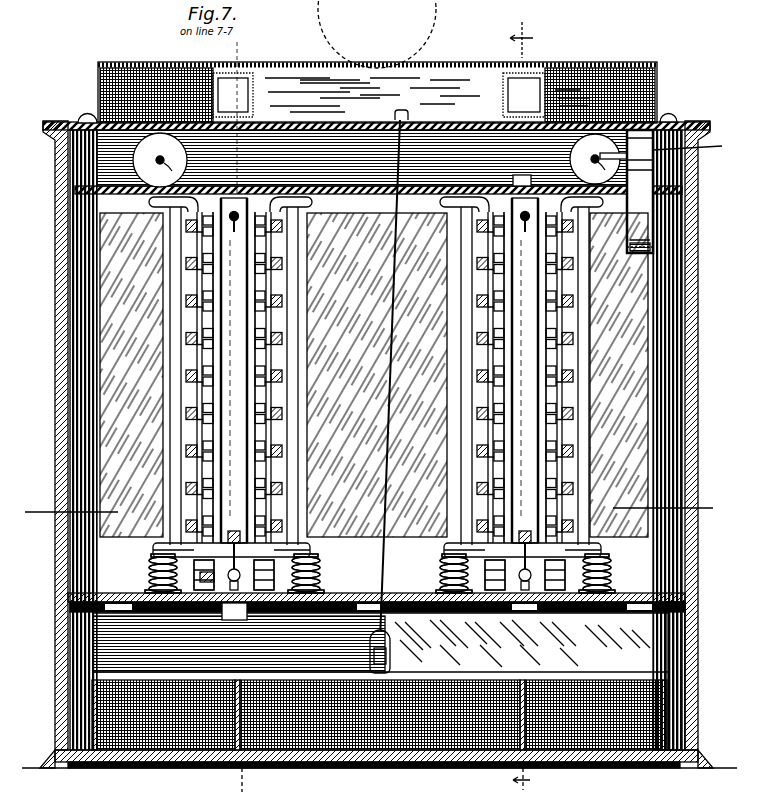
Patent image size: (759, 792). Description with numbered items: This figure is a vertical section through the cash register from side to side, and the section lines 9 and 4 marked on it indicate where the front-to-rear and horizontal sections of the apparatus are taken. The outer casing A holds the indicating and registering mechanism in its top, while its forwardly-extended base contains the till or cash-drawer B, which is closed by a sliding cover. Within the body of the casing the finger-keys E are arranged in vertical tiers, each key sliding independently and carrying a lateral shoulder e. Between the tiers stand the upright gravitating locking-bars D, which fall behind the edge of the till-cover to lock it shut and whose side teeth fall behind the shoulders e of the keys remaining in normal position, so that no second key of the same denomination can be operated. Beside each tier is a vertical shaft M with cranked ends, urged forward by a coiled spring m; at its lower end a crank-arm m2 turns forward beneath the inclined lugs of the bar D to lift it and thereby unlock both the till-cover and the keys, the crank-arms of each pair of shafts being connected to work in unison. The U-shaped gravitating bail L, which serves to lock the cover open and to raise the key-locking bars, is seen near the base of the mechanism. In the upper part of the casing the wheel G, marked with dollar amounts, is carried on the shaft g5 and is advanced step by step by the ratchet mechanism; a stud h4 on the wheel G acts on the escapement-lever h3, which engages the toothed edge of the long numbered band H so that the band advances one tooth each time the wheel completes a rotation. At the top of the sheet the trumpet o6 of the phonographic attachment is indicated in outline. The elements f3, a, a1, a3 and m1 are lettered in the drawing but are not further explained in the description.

The casing A is at (379, 441).
The till or cash-drawer B is at (137, 768).
The gravitating locking-bar D is at (379, 370).
The finger-key E is at (284, 340).
The vertical shaft M is at (200, 467).
The wheel G is at (376, 160).
The shaft g5 is at (383, 167).
The metal band or ribbon H is at (640, 191).
The escapement-lever h3 is at (693, 155).
The stud h4 is at (626, 151).
The cover box f3 is at (379, 95).
The conductor rods a is at (545, 291).
The lower nut a1 is at (233, 550).
The lower nut a3 is at (526, 545).
The lateral shoulder e is at (478, 409).
The coiled spring m is at (146, 574).
The spring block m1 is at (410, 574).
The crank-arm m2 is at (348, 573).
The U-shaped gravitating bail or bar L is at (200, 577).
The trumpet o6 is at (377, 34).
The section line 9 9 is at (521, 32).
The section line 4 4 is at (370, 511).